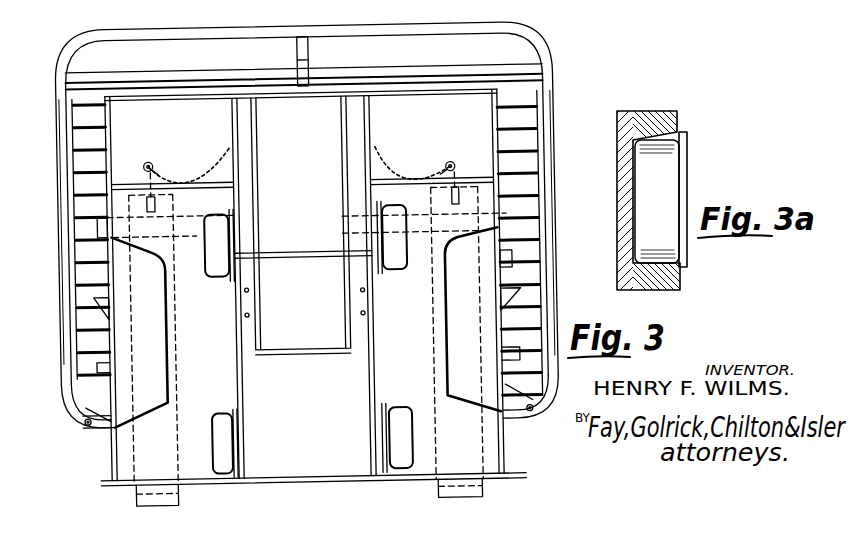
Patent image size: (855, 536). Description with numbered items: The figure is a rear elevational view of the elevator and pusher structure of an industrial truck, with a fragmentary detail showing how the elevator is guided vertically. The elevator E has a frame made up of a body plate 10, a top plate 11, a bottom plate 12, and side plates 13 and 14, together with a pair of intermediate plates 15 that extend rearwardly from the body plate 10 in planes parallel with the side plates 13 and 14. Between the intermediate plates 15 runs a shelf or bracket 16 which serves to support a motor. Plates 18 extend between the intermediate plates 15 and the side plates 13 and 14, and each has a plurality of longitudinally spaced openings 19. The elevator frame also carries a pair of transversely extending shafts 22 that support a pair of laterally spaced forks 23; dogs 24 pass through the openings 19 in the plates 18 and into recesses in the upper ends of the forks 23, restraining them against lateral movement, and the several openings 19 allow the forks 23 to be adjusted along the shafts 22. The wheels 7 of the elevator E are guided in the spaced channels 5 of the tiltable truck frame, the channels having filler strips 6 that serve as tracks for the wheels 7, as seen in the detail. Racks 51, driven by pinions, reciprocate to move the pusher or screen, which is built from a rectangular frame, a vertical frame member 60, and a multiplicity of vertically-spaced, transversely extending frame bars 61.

In FIG. 3, the top plate 11 is at (173, 96).
In FIG. 3, the frame bars 61 is at (229, 75).
In FIG. 3, the vertical frame member 60 is at (312, 53).
In FIG. 3, the dogs 24 is at (146, 167).
In FIG. 3, the openings 19 is at (373, 182).
In FIG. 3, the plates 18 is at (204, 176).
In FIG. 3, the wheels 7 is at (396, 226).
In FIG. 3A, the wheels 7 is at (672, 180).
In FIG. 3, the shafts 22 is at (196, 238).
In FIG. 3, the shelf or bracket 16 is at (316, 251).
In FIG. 3, the racks 51 is at (512, 268).
In FIG. 3, the body plate 10 is at (428, 290).
In FIG. 3, the intermediate plates 15 is at (237, 312).
In FIG. 3, the side plate 13 is at (108, 435).
In FIG. 3, the side plate 14 is at (504, 447).
In FIG. 3, the bottom plate 12 is at (412, 484).
In FIG. 3, the forks 23 is at (131, 489).
In FIG. 3, the elevator E is at (512, 416).
In FIG. 3A, the filler strips 6 is at (678, 119).
In FIG. 3A, the channels 5 is at (636, 292).